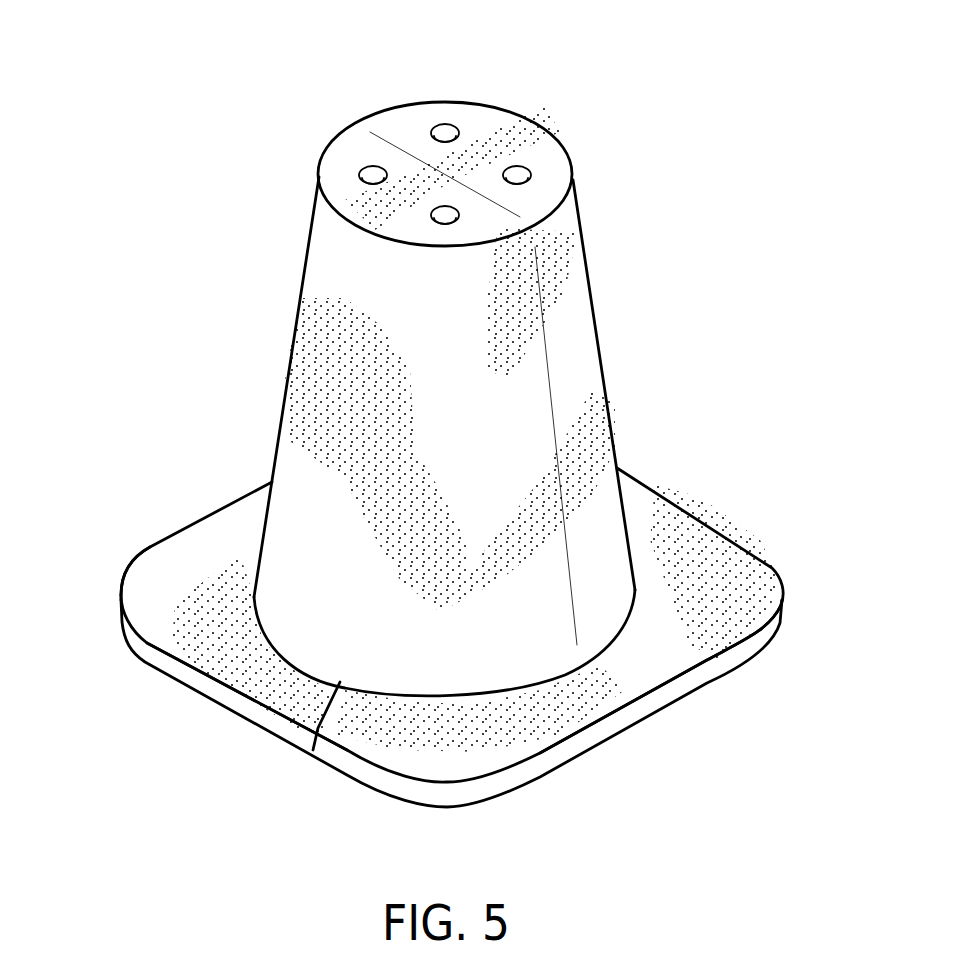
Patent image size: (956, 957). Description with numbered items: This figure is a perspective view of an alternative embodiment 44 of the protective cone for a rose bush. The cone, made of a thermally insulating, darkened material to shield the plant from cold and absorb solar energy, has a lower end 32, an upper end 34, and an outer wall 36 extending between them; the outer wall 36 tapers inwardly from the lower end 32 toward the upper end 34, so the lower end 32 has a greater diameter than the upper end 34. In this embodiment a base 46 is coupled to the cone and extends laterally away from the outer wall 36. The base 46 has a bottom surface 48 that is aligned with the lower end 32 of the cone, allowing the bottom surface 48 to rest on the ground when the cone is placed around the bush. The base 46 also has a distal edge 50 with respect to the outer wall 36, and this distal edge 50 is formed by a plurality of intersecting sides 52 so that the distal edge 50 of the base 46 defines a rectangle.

The lower end 32 is at (313, 750).
The upper end 34 is at (410, 128).
The outer wall 36 is at (333, 332).
The alternative embodiment 44 is at (407, 348).
The base 46 is at (730, 555).
The bottom surface 48 is at (640, 723).
The distal edge 50 is at (193, 677).
The intersecting sides 52 is at (160, 540).